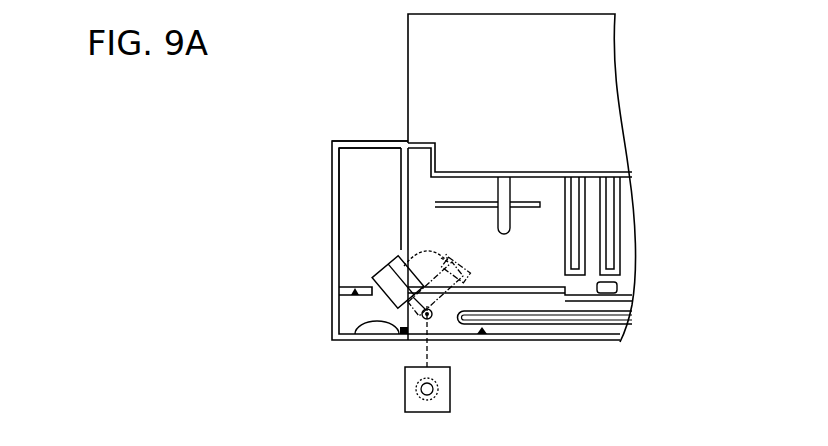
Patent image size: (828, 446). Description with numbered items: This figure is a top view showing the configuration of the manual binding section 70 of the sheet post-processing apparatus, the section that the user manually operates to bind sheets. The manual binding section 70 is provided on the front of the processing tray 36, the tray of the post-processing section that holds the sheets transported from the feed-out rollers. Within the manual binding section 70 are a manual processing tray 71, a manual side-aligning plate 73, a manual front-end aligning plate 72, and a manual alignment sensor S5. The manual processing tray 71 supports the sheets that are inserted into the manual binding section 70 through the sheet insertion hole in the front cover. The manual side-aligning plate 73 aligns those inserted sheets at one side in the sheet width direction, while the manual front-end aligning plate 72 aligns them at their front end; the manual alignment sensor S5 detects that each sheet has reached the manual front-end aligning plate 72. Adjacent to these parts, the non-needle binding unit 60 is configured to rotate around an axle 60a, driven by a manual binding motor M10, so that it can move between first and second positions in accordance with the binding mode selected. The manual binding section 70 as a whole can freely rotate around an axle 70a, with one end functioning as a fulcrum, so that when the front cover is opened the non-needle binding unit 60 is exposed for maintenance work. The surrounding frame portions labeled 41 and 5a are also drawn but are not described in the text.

The main body frame 41 is at (600, 70).
The processing tray 36 is at (463, 178).
The manual binding section 70 is at (322, 228).
The manual processing tray 71 is at (365, 157).
The inner surface 5a is at (338, 152).
The manual side-aligning plate 73 is at (405, 198).
The manual front-end aligning plate 72 is at (343, 287).
The manual alignment sensor S5 is at (357, 297).
The axle 70a is at (377, 321).
The non-needle binding unit 60 is at (407, 330).
The axle 60a is at (433, 316).
The manual binding motor M10 is at (448, 392).